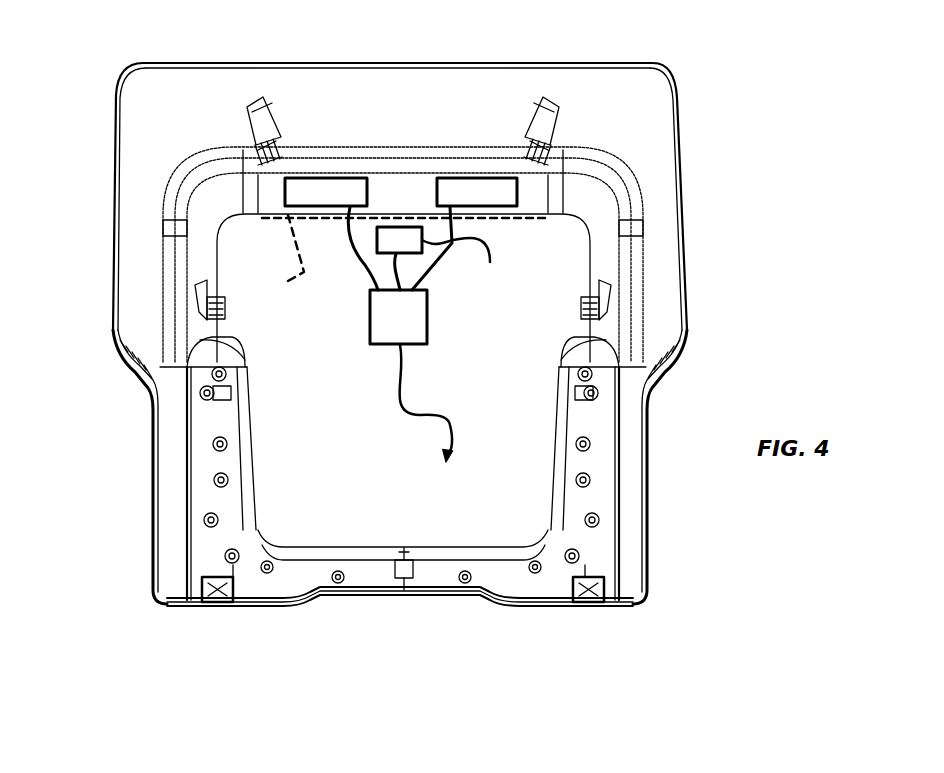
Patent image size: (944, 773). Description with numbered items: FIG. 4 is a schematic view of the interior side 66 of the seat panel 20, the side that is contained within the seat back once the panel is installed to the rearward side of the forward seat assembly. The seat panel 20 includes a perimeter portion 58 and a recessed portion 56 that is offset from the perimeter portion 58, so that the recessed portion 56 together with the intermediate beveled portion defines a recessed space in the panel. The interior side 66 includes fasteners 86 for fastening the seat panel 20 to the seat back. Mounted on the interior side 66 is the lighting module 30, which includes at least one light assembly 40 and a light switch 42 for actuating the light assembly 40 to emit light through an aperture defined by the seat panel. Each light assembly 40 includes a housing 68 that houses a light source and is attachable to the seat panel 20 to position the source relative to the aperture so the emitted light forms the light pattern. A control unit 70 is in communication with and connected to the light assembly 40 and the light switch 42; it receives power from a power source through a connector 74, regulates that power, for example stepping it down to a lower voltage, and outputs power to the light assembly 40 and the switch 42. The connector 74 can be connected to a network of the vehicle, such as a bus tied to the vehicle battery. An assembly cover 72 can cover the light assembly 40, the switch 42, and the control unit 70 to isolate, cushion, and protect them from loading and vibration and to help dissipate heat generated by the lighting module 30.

The seat panel 20 is at (730, 150).
The lighting module 30 is at (435, 120).
The light assembly 40 is at (310, 158).
The light switch 42 is at (435, 257).
The recessed portion 56 is at (568, 268).
The perimeter portion 58 is at (607, 96).
The interior side of seat panel 66 is at (201, 120).
The housing 68 is at (367, 192).
The control unit 70 is at (370, 331).
The assembly cover 72 is at (280, 255).
The connector 74 is at (395, 386).
The fastener 86 is at (246, 104).